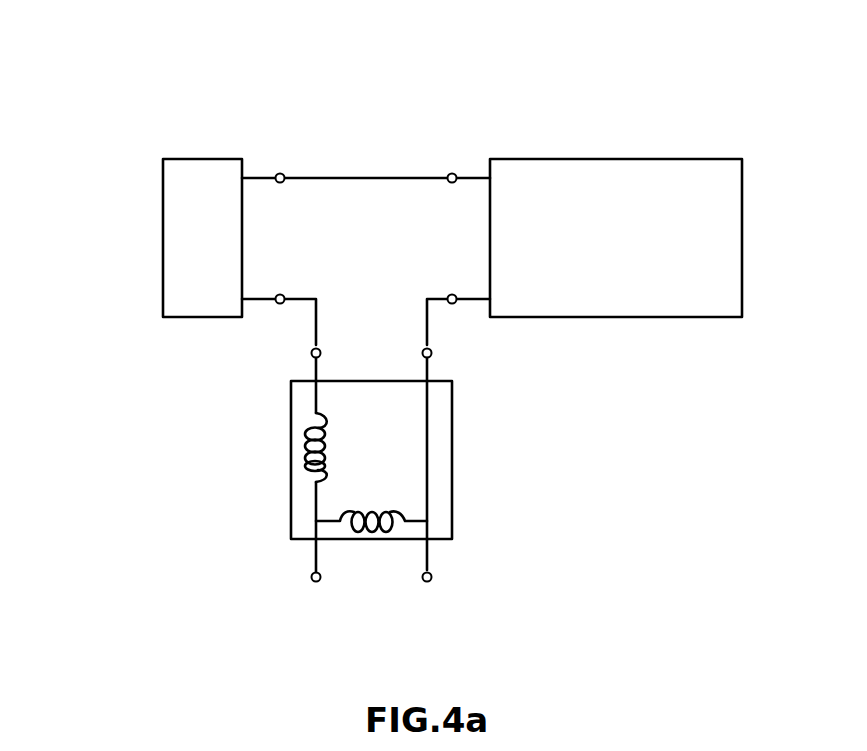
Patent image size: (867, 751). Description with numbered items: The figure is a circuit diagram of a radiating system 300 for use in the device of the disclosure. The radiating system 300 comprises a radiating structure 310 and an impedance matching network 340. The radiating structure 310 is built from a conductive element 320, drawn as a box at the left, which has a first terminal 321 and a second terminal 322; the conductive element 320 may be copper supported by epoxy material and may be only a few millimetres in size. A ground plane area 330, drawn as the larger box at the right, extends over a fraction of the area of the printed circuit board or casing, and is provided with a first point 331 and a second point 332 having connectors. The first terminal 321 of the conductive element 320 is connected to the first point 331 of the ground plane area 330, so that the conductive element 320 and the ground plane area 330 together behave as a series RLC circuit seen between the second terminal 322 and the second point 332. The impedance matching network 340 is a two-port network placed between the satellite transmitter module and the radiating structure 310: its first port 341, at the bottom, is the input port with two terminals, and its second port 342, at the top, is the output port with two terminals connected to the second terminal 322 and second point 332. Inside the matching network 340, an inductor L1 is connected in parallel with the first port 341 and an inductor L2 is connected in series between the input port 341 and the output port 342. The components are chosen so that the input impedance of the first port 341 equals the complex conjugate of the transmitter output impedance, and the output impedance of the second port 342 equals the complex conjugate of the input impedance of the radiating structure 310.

The radiating system 300 is at (178, 398).
The radiating structure 310 is at (354, 98).
The conductive element 320 is at (163, 230).
The first terminal 321 is at (280, 172).
The second terminal 322 is at (280, 306).
The ground plane area 330 is at (578, 159).
The first point 331 is at (452, 172).
The second point 332 is at (457, 304).
The impedance matching network 340 is at (452, 477).
The first port 341 is at (365, 568).
The second port 342 is at (378, 355).
The inductor L1 is at (396, 540).
The inductor L2 is at (305, 450).